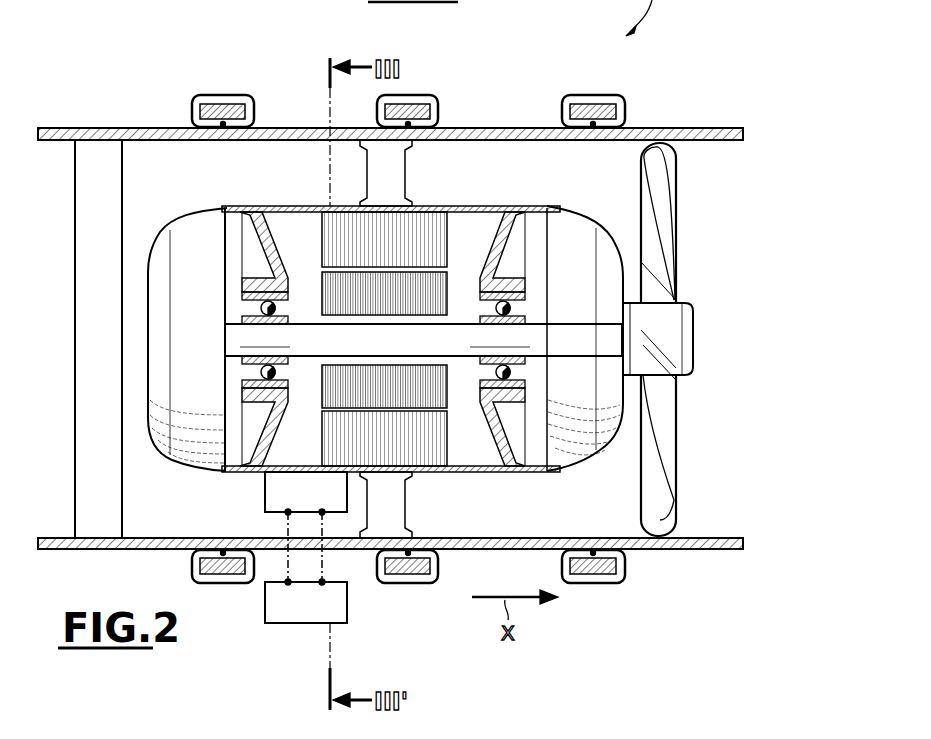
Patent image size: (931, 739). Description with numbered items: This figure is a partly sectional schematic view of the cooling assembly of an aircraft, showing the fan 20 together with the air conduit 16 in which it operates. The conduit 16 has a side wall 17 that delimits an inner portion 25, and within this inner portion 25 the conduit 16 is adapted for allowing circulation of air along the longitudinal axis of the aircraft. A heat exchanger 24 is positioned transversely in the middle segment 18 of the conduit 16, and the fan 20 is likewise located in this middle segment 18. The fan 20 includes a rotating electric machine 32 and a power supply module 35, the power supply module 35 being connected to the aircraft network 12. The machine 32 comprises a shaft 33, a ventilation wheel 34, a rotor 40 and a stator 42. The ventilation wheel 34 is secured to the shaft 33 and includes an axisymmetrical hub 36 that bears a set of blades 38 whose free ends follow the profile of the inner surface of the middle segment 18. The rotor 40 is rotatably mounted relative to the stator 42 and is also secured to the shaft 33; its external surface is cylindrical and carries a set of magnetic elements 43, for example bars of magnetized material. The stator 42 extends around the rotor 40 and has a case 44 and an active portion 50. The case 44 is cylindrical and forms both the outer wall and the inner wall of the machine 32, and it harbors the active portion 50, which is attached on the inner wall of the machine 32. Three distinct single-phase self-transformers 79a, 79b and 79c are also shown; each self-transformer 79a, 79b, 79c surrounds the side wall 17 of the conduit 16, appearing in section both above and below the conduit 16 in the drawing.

The network 12 is at (306, 566).
The air conduit 16 is at (701, 549).
The side wall 17 is at (727, 128).
The middle segment 18 is at (185, 131).
The fan 20 is at (647, 120).
The heat exchanger 24 is at (100, 155).
The inner portion 25 is at (246, 168).
The machine 32 is at (188, 232).
The shaft 33 is at (630, 380).
The ventilation wheel 34 is at (699, 339).
The power supply module 35 is at (306, 492).
The hub 36 is at (693, 362).
The fan blade 38 is at (665, 450).
The rotor 40 is at (306, 331).
The stator 42 is at (360, 220).
The magnetic elements 43 is at (395, 315).
The case 44 is at (500, 207).
The active portion 50 is at (430, 206).
The self-transformer 79a is at (592, 103).
The self-transformer 79b is at (416, 103).
The self-transformer 79c is at (224, 103).